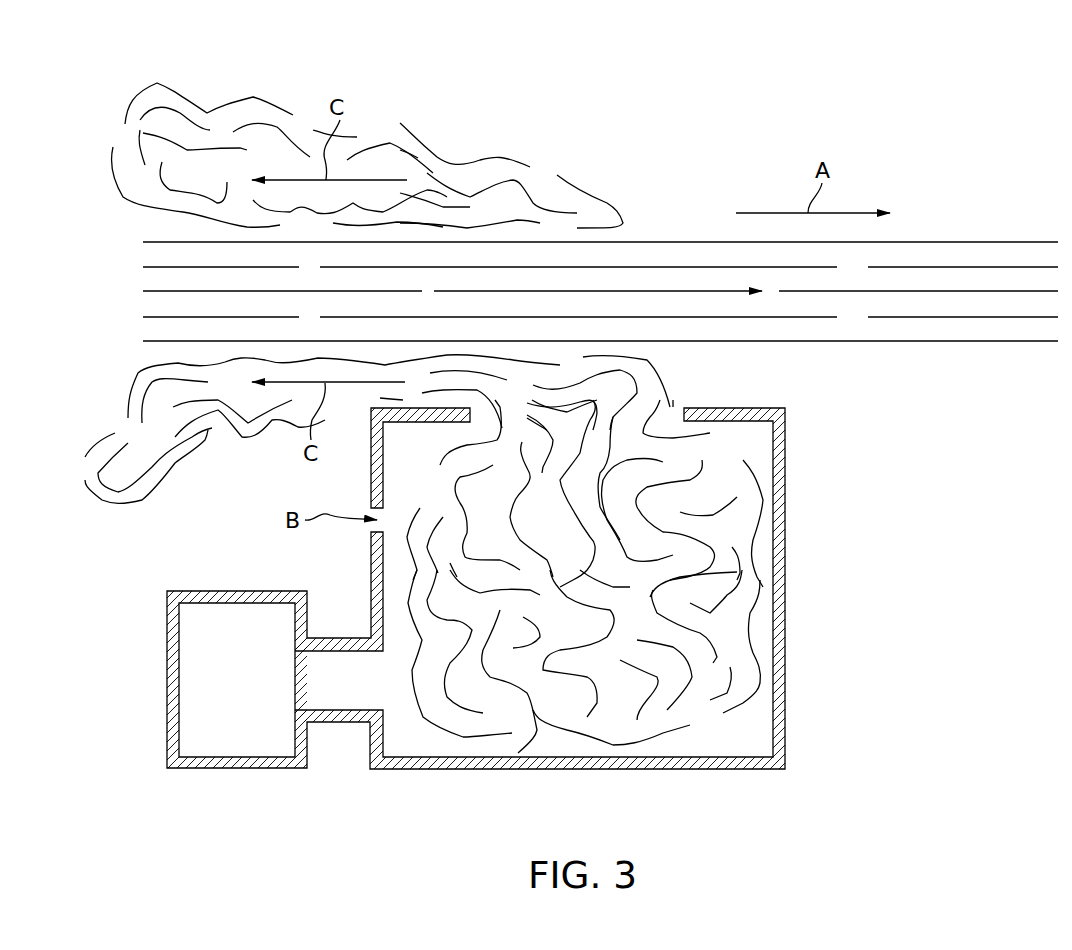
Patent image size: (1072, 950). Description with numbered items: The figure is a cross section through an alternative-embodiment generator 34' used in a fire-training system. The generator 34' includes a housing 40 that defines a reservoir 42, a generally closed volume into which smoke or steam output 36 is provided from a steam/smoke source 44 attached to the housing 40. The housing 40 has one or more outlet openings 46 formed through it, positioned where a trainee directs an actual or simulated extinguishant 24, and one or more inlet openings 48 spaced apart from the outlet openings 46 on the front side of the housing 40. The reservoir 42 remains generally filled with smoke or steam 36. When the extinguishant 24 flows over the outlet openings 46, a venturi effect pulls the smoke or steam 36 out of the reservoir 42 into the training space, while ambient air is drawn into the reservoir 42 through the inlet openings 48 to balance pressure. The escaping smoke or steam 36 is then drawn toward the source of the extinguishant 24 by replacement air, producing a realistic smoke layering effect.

The extinguishant 24 is at (676, 242).
The generator 34' is at (812, 595).
The steam/smoke output 36 is at (253, 98).
The housing 40 is at (786, 607).
The reservoir 42 is at (650, 752).
The steam/smoke source 44 is at (222, 590).
The outlet opening 46 is at (672, 407).
The inlet opening 48 is at (362, 532).